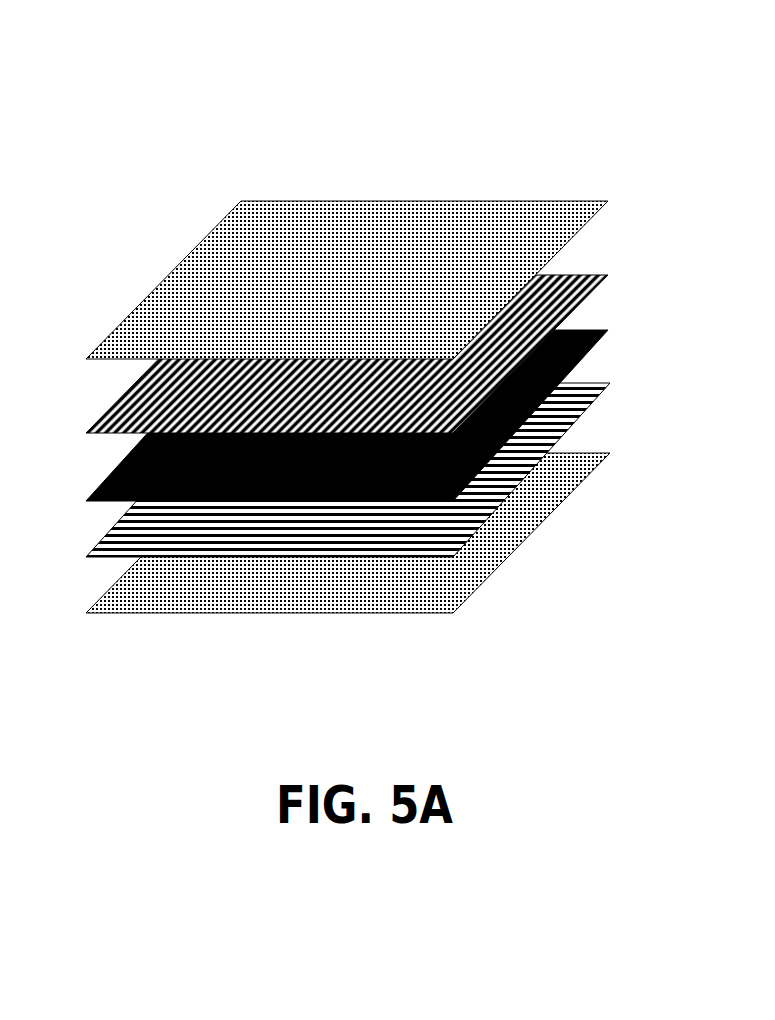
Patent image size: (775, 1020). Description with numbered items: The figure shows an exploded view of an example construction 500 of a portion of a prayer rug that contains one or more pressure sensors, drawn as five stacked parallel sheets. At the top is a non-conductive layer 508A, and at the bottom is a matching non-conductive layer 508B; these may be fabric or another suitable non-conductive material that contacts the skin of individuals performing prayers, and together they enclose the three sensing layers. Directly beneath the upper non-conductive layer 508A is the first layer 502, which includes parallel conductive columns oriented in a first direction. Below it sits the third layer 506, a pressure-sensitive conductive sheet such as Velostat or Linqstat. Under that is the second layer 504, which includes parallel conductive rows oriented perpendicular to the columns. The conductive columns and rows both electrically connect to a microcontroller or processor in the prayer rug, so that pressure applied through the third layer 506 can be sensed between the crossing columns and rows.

The construction 500 is at (429, 333).
The non-conductive layer 508A is at (602, 207).
The first layer 502 is at (603, 280).
The third layer 506 is at (603, 336).
The second layer 504 is at (597, 398).
The non-conductive layer 508B is at (581, 483).